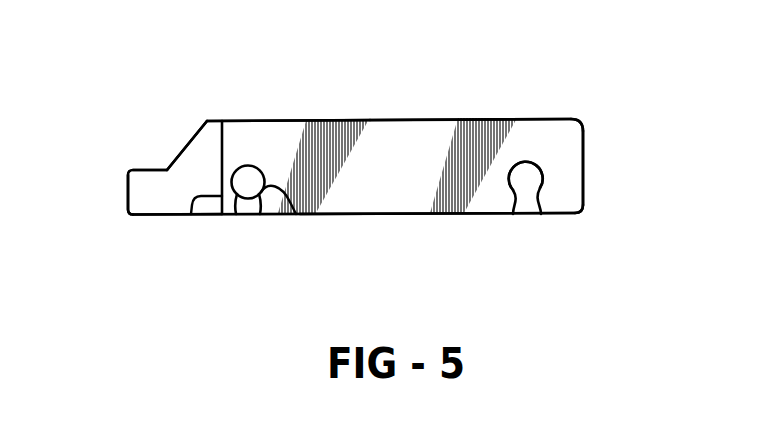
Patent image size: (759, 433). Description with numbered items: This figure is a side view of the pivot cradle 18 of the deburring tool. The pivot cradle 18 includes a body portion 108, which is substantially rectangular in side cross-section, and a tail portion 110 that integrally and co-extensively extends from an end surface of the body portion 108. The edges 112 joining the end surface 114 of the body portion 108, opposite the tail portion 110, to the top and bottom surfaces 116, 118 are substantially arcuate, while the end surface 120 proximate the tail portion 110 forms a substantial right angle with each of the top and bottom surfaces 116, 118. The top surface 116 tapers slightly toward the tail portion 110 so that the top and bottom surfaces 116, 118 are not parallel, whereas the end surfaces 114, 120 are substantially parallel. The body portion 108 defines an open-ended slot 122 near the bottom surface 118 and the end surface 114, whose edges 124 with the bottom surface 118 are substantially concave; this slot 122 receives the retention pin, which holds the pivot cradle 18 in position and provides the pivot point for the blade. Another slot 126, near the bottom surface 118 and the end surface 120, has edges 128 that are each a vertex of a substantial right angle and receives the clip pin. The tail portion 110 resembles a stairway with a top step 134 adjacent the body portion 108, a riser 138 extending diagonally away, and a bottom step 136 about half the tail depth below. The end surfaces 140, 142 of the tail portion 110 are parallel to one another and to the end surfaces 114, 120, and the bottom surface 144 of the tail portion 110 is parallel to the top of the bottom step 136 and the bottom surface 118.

The pivot cradle 18 is at (358, 110).
The body portion 108 is at (466, 121).
The tail portion 110 is at (118, 190).
The edges 112 is at (583, 130).
The end surface 114 is at (583, 155).
The top surface 116 is at (403, 119).
The bottom surface 118 is at (473, 213).
The end surface 120 is at (223, 124).
The open-ended slot 122 is at (531, 178).
The edges 124 is at (512, 214).
The slot 126 is at (296, 214).
The edges 128 is at (258, 214).
The top step 134 is at (265, 121).
The bottom step 136 is at (147, 170).
The riser 138 is at (183, 150).
The end surface 140 is at (126, 206).
The end surface 142 is at (192, 214).
The bottom surface 144 is at (145, 213).